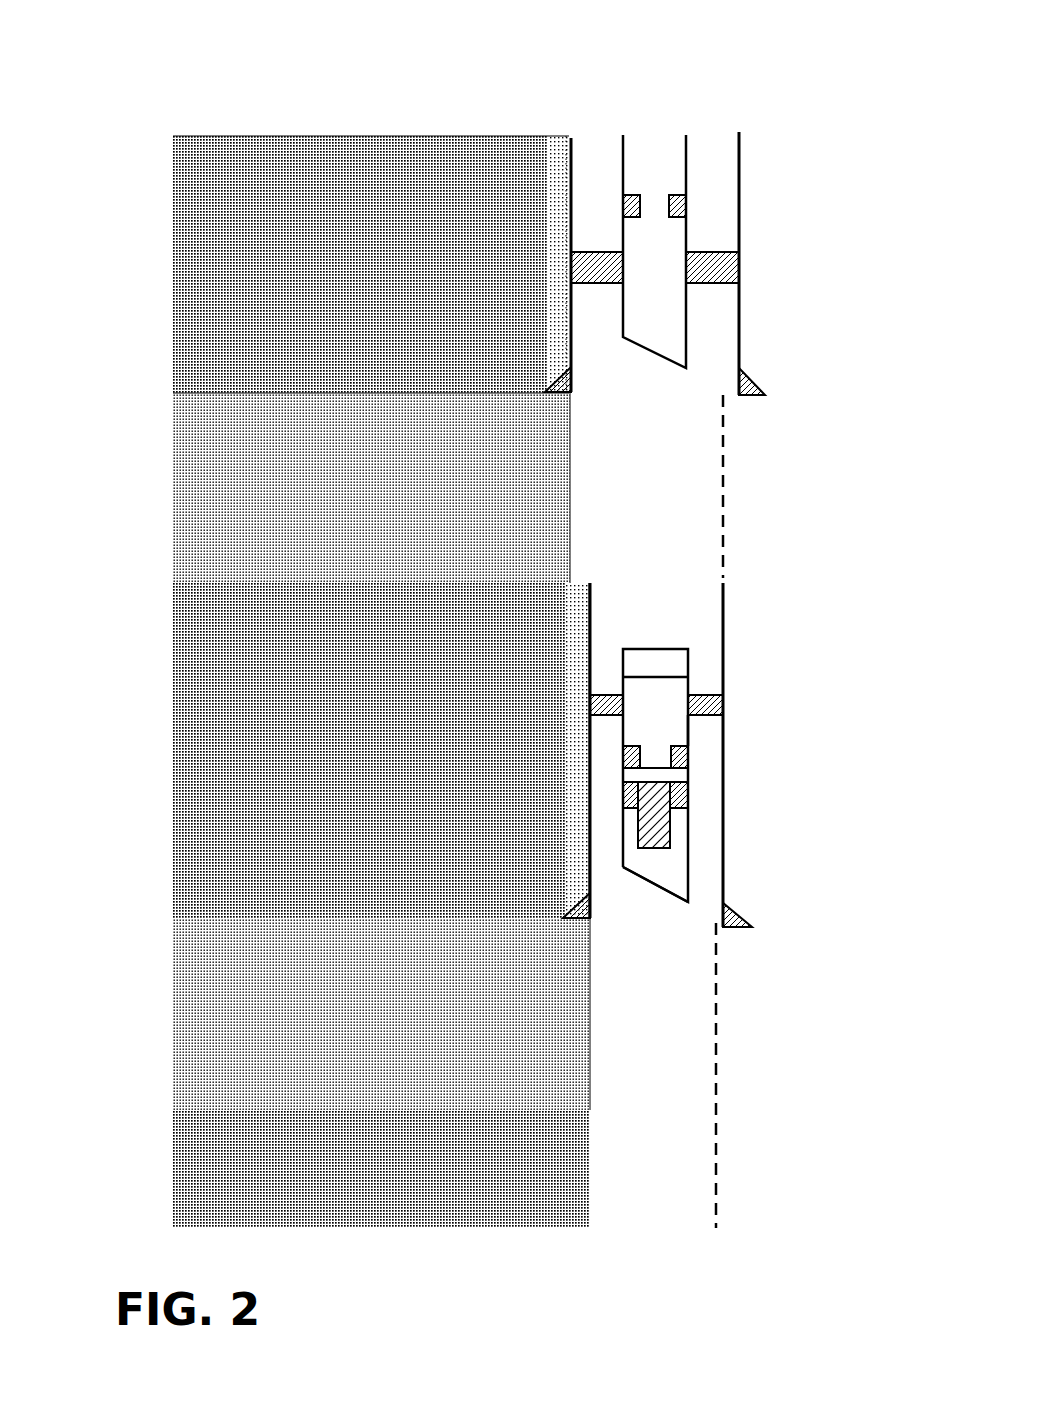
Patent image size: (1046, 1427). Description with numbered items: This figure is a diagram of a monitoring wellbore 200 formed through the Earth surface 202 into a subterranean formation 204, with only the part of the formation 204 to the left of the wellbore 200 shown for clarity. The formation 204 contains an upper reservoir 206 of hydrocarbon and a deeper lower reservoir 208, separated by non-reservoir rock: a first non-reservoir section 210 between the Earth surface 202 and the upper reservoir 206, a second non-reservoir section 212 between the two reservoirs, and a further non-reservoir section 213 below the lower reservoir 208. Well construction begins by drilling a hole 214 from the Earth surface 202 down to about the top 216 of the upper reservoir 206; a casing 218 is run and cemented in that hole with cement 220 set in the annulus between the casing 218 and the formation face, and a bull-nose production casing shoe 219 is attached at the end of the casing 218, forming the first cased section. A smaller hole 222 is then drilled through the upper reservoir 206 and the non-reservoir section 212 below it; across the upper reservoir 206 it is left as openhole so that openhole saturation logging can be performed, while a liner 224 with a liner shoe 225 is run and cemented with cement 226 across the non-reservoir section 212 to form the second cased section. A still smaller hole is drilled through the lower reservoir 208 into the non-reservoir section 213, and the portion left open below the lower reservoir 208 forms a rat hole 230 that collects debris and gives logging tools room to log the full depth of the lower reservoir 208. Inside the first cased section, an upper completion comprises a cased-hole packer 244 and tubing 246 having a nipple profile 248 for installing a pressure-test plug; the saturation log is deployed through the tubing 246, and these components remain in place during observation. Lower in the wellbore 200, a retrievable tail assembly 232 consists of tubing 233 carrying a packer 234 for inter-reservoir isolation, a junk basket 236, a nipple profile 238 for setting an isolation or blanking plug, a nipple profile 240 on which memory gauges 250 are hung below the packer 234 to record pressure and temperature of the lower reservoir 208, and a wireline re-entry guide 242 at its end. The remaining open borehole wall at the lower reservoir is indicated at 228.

The wellbore 200 is at (713, 656).
The Earth surface 202 is at (333, 134).
The subterranean formation 204 is at (370, 673).
The upper reservoir 206 is at (225, 502).
The lower reservoir 208 is at (225, 1040).
The first non-reservoir section 210 is at (220, 222).
The second non-reservoir section 212 is at (225, 740).
The non-reservoir section 213 is at (225, 1185).
The hole 214 is at (546, 160).
The top of the upper reservoir 216 is at (245, 393).
The casing 218 is at (572, 165).
The production casing shoe 219 is at (758, 373).
The cement 220 is at (556, 300).
The hole 222 is at (570, 497).
The liner 224 is at (588, 642).
The liner shoe 225 is at (750, 917).
The cement 226 is at (577, 605).
The open hole section 228 is at (600, 1025).
The rat hole 230 is at (716, 1170).
The tail assembly 232 is at (682, 642).
The tubing 233 is at (688, 729).
The packer 234 is at (723, 705).
The junk basket 236 is at (672, 662).
The nipple profile 238 is at (680, 758).
The nipple profile 240 is at (680, 797).
The wireline re-entry guide 242 is at (688, 883).
The cased-hole packer 244 is at (720, 267).
The tubing 246 is at (686, 168).
The nipple profile 248 is at (678, 206).
The memory gauges 250 is at (670, 836).